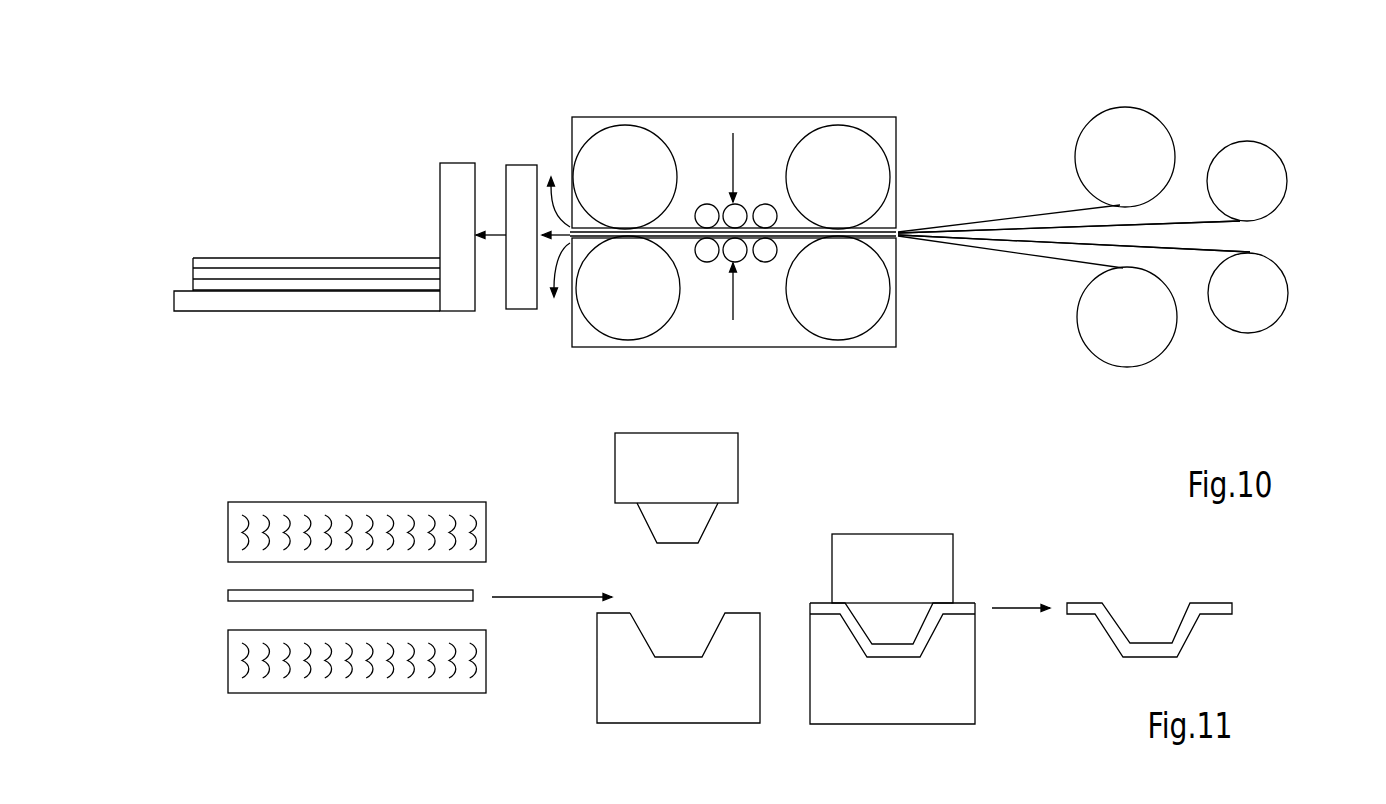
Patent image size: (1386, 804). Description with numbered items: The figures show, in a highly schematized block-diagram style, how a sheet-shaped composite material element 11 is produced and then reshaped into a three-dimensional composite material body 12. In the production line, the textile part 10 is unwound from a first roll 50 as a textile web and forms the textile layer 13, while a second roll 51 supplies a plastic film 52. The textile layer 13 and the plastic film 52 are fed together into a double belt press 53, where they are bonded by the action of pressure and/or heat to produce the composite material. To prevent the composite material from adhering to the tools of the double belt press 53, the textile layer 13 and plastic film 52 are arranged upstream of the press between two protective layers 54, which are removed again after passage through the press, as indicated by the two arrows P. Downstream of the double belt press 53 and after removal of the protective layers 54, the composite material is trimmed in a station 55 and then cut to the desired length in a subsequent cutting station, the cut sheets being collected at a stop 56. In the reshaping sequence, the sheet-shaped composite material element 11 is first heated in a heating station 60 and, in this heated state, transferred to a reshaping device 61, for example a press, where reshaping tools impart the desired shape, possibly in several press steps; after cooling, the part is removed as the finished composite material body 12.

In FIG. 10, the textile part 10 is at (1240, 221).
In FIG. 10, the composite material element 11 is at (193, 262).
In FIG. 11, the composite material element 11 is at (228, 593).
In FIG. 11, the composite material body 12 is at (1232, 608).
In FIG. 10, the textile layer 13 is at (1172, 222).
In FIG. 10, the first roll 50 is at (1250, 170).
In FIG. 10, the second roll 51 is at (1268, 308).
In FIG. 10, the plastic film 52 is at (1192, 252).
In FIG. 10, the double belt press 53 is at (822, 103).
In FIG. 10, the protective layers 54 is at (1000, 218).
In FIG. 10, the station 55 is at (520, 178).
In FIG. 10, the stacking stop 56 is at (459, 175).
In FIG. 11, the heating station 60 is at (356, 510).
In FIG. 11, the reshaping device 61 is at (767, 473).
In FIG. 10, the arrows P is at (570, 200).